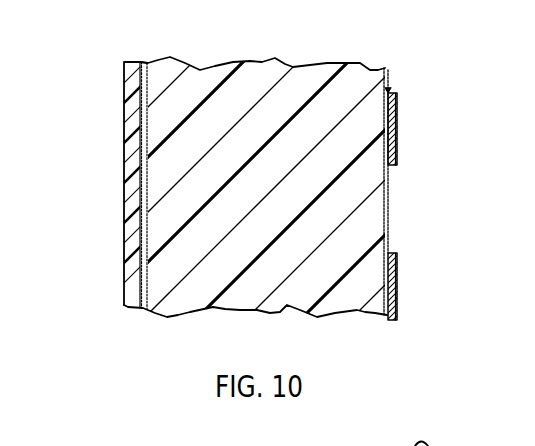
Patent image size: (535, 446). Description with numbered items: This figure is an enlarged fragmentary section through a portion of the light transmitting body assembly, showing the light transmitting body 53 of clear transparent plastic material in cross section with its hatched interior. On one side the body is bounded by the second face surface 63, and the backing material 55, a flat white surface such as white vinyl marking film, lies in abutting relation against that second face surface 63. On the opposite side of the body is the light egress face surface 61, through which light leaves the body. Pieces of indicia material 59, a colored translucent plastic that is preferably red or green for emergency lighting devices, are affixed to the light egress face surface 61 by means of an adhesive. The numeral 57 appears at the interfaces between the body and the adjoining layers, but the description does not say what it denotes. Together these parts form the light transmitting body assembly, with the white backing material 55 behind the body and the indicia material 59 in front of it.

The light transmitting body 53 is at (260, 68).
The backing material 55 is at (124, 146).
The bond joint 57 is at (146, 62).
The indicia material 59 is at (397, 117).
The light egress face surface 61 is at (385, 207).
The second face surface 63 is at (148, 72).